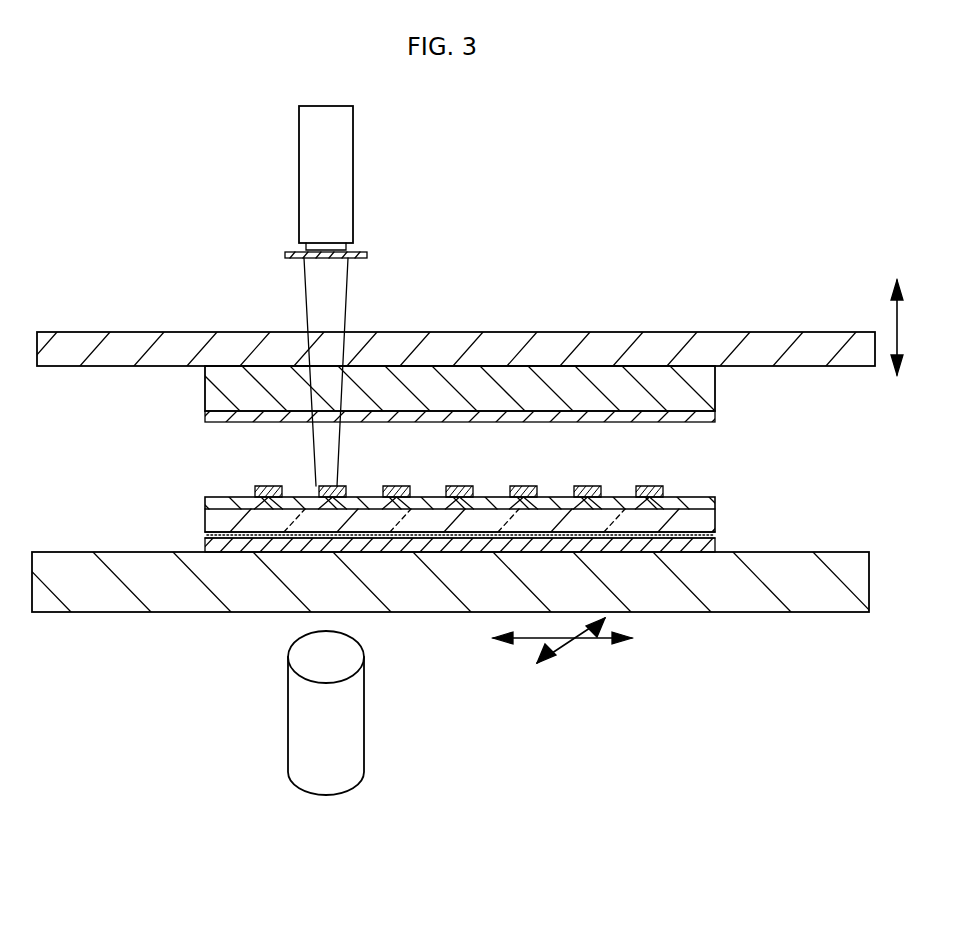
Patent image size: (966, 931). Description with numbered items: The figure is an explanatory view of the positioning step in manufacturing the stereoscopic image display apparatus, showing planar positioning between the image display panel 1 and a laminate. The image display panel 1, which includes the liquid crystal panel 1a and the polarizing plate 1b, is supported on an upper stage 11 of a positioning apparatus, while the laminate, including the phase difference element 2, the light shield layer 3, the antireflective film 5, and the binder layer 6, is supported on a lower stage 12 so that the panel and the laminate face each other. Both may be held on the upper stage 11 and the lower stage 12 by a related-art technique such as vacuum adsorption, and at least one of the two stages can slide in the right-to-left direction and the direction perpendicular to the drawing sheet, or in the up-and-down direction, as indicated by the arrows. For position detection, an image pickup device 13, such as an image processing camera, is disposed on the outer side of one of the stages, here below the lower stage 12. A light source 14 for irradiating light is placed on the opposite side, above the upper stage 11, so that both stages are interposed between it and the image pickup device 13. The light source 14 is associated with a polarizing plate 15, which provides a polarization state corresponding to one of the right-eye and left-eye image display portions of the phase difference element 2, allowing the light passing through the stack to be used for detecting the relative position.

The light source 14 is at (345, 146).
The polarizing plate 15 is at (362, 261).
The upper stage 11 is at (773, 340).
The image display panel 1 is at (506, 399).
The liquid crystal panel 1a is at (706, 388).
The polarizing plate 1b is at (708, 414).
The light shield layer 3 is at (655, 485).
The phase difference element 2 is at (720, 497).
The binder layer 6 is at (715, 533).
The antireflective film 5 is at (712, 545).
The lower stage 12 is at (862, 578).
The image pickup device 13 is at (355, 710).